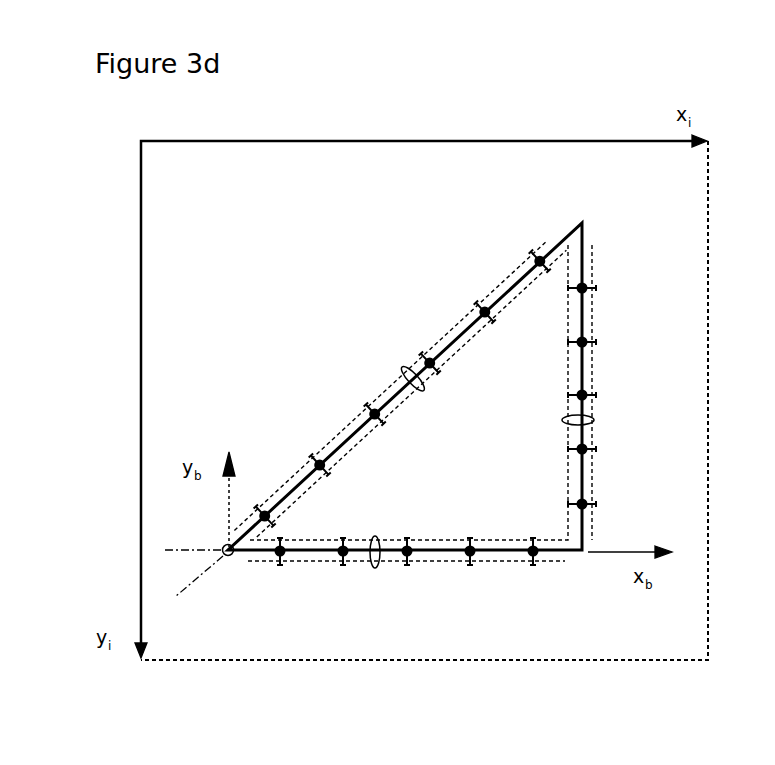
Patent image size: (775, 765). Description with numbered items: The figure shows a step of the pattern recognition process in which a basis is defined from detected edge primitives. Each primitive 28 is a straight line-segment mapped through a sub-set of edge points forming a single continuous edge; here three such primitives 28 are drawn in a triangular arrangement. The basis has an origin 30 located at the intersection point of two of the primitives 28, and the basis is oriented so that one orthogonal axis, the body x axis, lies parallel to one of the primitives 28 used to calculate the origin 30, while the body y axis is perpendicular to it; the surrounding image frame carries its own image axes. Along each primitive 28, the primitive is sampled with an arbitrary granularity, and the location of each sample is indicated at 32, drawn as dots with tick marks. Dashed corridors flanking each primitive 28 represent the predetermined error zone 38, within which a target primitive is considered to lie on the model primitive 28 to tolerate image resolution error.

The primitive 28 is at (478, 311).
The origin 30 is at (232, 555).
The sample location 32 is at (584, 503).
The error zone 38 is at (411, 372).